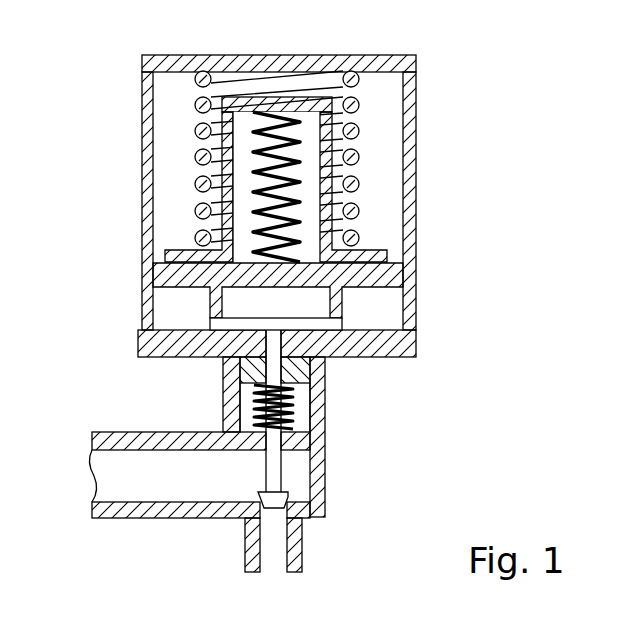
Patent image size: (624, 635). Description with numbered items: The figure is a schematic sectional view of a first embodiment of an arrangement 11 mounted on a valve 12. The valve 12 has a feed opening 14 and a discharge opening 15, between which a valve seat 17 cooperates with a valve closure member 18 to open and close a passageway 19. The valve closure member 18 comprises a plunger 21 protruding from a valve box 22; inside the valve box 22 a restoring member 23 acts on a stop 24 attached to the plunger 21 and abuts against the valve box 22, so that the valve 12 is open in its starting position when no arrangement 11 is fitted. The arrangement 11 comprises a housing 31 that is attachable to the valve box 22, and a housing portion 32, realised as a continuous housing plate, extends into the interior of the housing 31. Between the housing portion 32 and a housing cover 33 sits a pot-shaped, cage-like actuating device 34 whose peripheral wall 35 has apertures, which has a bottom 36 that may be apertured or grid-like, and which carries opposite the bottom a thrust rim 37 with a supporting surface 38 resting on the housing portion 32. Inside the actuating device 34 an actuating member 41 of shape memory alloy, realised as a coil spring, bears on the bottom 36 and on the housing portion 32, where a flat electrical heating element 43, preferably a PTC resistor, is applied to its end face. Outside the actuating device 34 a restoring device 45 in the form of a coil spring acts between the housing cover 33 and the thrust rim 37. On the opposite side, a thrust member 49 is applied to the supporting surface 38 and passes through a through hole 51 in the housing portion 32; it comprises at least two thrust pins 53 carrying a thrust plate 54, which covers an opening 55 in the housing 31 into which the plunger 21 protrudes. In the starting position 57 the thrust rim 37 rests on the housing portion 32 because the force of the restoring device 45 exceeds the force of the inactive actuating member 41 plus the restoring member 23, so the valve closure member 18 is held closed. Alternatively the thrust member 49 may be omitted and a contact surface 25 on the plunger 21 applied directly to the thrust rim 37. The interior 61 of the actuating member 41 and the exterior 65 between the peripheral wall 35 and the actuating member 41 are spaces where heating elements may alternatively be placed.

The arrangement 11 is at (423, 38).
The valve 12 is at (335, 423).
The feed opening 14 is at (277, 560).
The discharge opening 15 is at (115, 477).
The valve seat 17 is at (240, 497).
The valve closure member 18 is at (290, 494).
The passageway 19 is at (298, 537).
The plunger 21 is at (280, 467).
The valve box 22 is at (325, 398).
The restoring member 23 is at (253, 393).
The stop 24 is at (312, 373).
The contact surface 25 is at (278, 320).
The housing 31 is at (130, 107).
The housing portion 32 is at (170, 293).
The housing cover 33 is at (268, 58).
The actuating device 34 is at (213, 202).
The peripheral wall 35 is at (227, 170).
The bottom 36 is at (287, 90).
The thrust rim 37 is at (153, 257).
The supporting surface 38 is at (152, 272).
The actuating member 41 is at (303, 155).
The heating element 43 is at (340, 283).
The restoring device 45 is at (366, 100).
The thrust member 49 is at (388, 295).
The through hole 51 is at (345, 305).
The thrust pins 53 is at (345, 315).
The thrust plate 54 is at (138, 355).
The opening 55 is at (287, 347).
The starting position 57 is at (380, 220).
The interior 61 is at (245, 97).
The exterior 65 is at (242, 145).